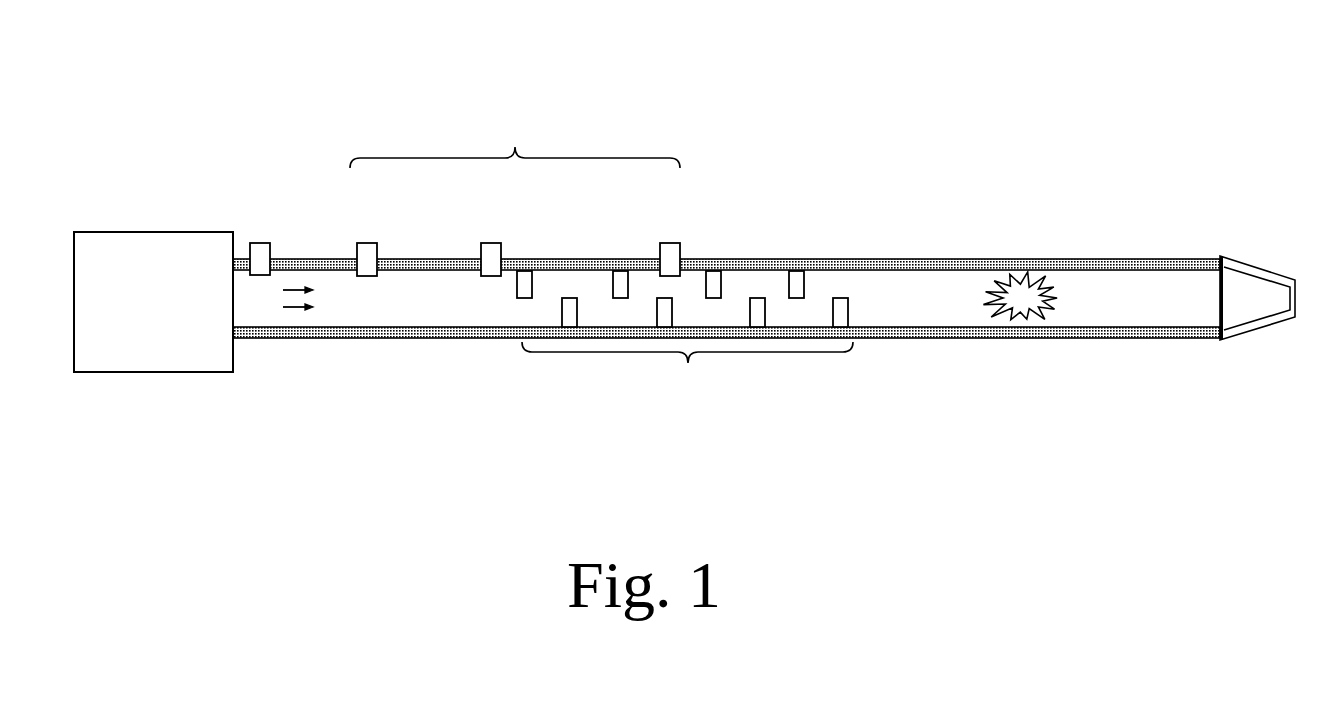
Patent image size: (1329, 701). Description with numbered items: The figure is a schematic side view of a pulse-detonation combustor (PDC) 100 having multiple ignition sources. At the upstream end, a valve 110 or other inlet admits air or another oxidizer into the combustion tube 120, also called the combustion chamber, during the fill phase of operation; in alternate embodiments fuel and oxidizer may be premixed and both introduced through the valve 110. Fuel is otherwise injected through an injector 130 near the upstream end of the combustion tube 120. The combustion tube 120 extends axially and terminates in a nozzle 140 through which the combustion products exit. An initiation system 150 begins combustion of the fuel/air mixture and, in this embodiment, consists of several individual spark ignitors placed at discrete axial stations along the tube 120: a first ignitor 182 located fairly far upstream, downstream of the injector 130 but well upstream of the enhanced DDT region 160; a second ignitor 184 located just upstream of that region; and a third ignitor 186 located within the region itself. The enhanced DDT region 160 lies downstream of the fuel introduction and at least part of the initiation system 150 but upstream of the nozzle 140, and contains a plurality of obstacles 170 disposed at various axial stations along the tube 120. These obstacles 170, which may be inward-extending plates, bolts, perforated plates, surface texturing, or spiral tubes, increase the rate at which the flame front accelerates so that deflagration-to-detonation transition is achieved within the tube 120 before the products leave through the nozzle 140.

The pulse-detonation combustor 100 is at (1163, 114).
The valve 110 is at (196, 385).
The combustion tube 120 is at (951, 348).
The injector 130 is at (251, 231).
The nozzle 140 is at (1244, 251).
The initiation system 150 is at (497, 193).
The enhanced DDT region 160 is at (687, 311).
The obstacles 170 is at (727, 275).
The first ignitor 182 is at (361, 230).
The second ignitor 184 is at (484, 232).
The third ignitor 186 is at (665, 238).